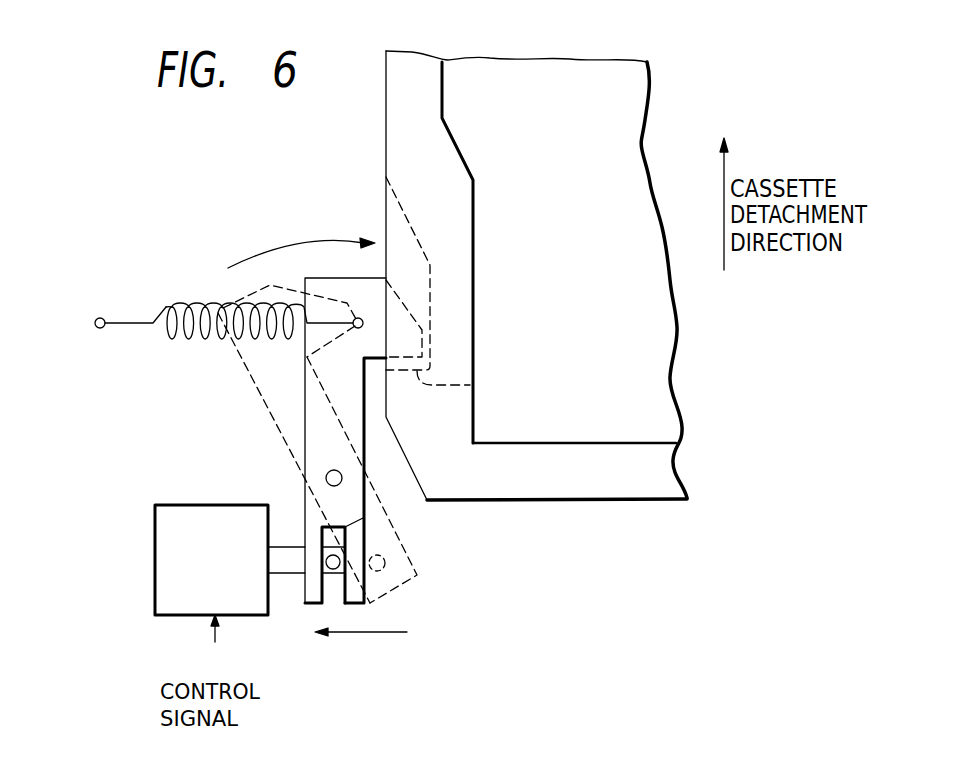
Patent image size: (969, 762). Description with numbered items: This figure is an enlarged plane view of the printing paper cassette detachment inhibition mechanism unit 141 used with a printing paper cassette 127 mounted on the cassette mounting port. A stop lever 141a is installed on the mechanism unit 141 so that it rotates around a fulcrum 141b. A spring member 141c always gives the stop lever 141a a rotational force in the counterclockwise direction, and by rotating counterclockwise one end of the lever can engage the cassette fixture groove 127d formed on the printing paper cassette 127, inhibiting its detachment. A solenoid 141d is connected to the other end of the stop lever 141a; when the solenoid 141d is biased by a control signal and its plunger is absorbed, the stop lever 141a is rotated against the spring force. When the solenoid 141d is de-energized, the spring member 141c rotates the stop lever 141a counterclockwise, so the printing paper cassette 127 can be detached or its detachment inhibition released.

The printing paper cassette 127 is at (642, 488).
The cassette fixture groove 127d is at (470, 385).
The printing paper cassette detachment inhibition mechanism unit 141 is at (223, 245).
The stop lever 141a is at (312, 393).
The fulcrum 141b is at (326, 471).
The spring member 141c is at (165, 303).
The solenoid 141d is at (168, 523).